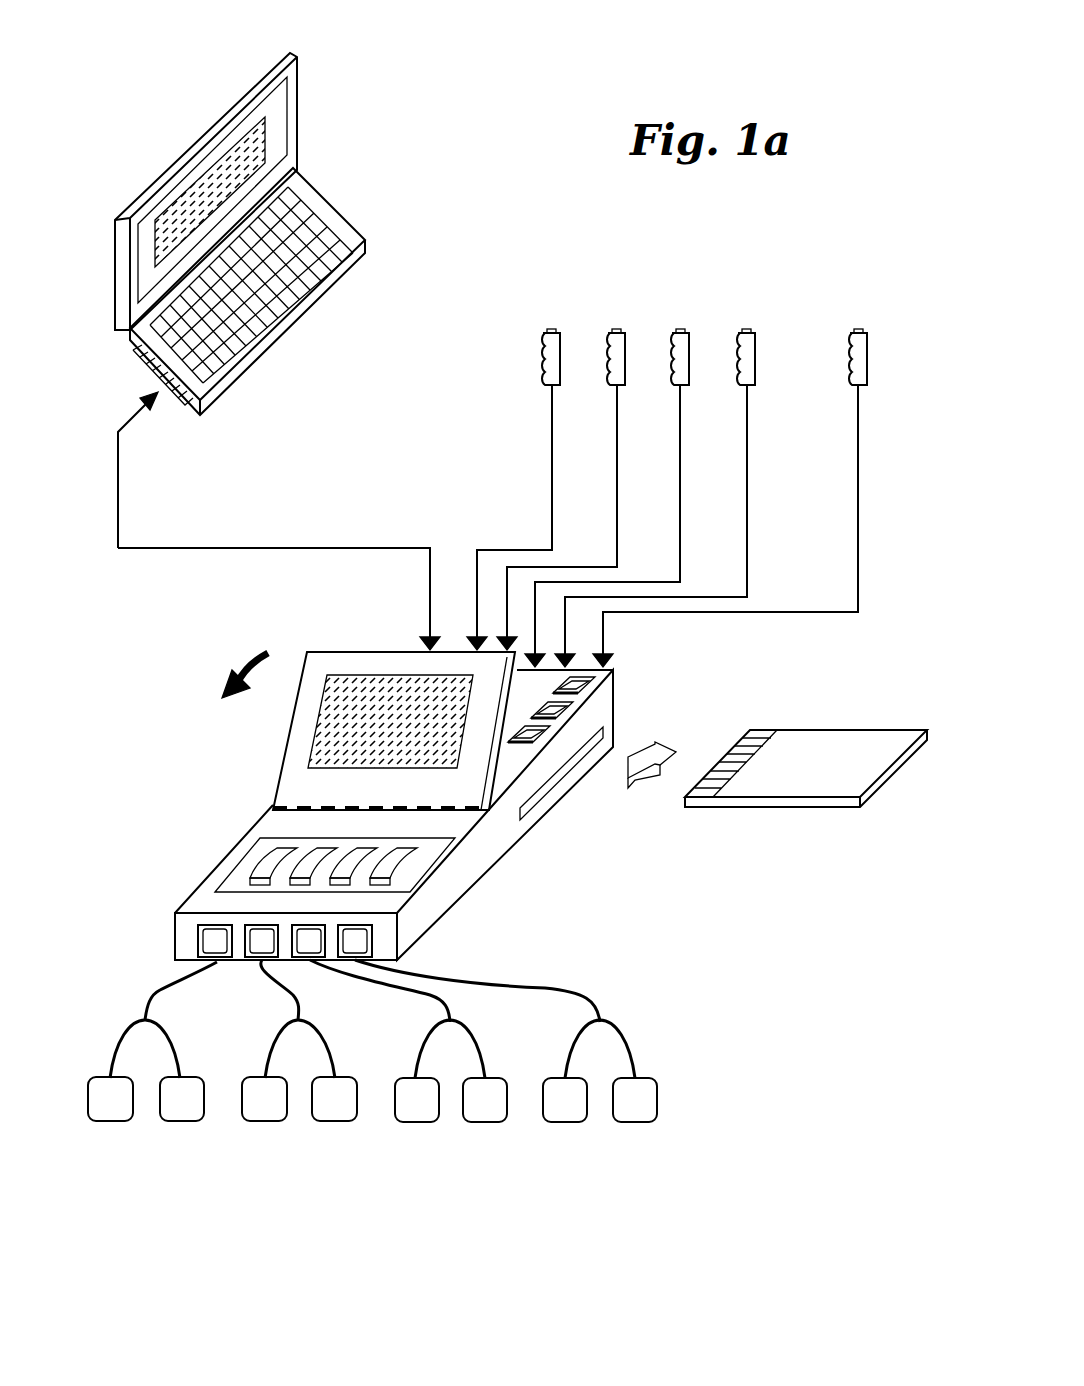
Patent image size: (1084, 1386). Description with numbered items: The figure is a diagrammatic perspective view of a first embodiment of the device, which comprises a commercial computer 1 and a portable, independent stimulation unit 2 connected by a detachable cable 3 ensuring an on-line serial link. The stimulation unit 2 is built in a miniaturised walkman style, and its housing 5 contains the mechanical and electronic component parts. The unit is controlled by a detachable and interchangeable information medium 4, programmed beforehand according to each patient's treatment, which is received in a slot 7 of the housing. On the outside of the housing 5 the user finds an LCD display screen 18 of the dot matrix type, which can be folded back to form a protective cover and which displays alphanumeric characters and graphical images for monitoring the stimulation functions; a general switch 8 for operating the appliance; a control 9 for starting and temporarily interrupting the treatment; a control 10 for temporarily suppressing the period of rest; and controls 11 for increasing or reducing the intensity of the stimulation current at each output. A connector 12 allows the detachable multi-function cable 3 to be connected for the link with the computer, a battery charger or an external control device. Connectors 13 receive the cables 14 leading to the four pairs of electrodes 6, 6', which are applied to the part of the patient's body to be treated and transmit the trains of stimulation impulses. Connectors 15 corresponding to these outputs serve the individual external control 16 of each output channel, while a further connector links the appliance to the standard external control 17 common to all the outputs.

The computer 1 is at (370, 140).
The stimulation unit 2 is at (430, 767).
The detachable cable 3 is at (290, 548).
The information medium 4 is at (832, 850).
The housing 5 is at (488, 873).
The electrode 6 is at (337, 1159).
The electrode 6' is at (408, 1159).
The slot 7 is at (540, 797).
The general switch 8 is at (515, 740).
The control 9 is at (538, 715).
The control 10 is at (560, 690).
The controls 11 is at (397, 870).
The connector 12 is at (394, 689).
The connectors 13 is at (253, 950).
The cables 14 is at (157, 950).
The connectors 15 is at (472, 640).
The individual external control 16 is at (617, 332).
The standard external control 17 is at (858, 330).
The LCD display screen 18 is at (350, 700).